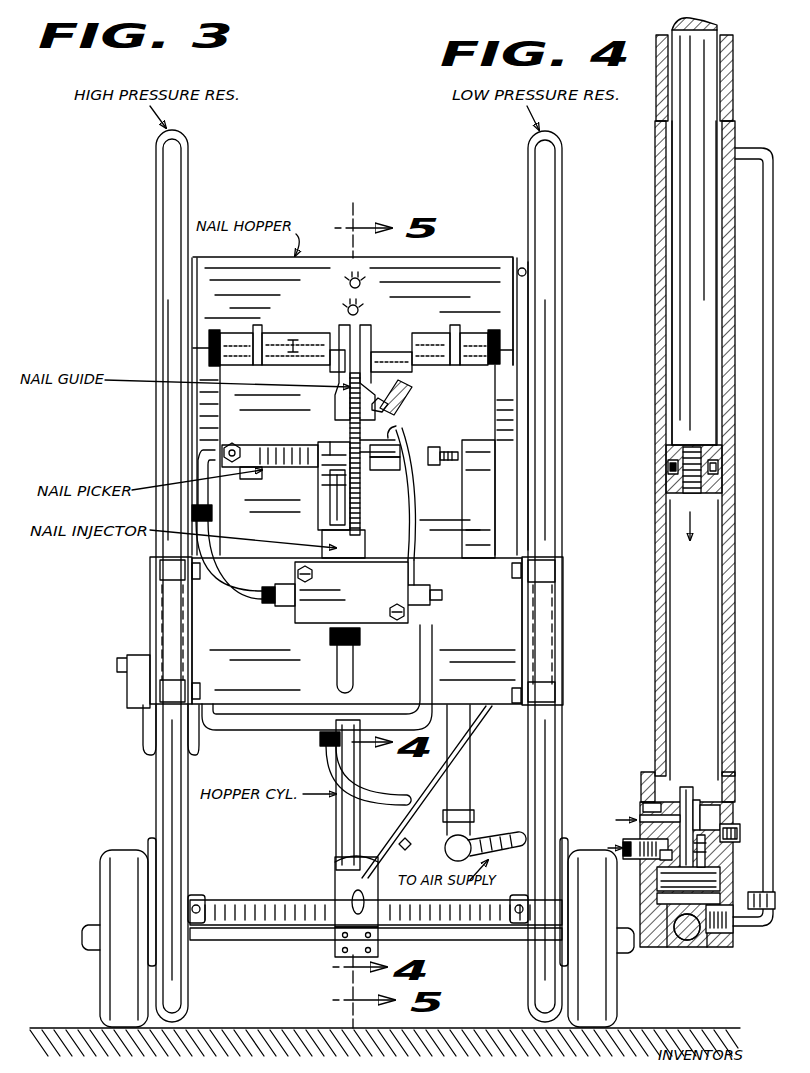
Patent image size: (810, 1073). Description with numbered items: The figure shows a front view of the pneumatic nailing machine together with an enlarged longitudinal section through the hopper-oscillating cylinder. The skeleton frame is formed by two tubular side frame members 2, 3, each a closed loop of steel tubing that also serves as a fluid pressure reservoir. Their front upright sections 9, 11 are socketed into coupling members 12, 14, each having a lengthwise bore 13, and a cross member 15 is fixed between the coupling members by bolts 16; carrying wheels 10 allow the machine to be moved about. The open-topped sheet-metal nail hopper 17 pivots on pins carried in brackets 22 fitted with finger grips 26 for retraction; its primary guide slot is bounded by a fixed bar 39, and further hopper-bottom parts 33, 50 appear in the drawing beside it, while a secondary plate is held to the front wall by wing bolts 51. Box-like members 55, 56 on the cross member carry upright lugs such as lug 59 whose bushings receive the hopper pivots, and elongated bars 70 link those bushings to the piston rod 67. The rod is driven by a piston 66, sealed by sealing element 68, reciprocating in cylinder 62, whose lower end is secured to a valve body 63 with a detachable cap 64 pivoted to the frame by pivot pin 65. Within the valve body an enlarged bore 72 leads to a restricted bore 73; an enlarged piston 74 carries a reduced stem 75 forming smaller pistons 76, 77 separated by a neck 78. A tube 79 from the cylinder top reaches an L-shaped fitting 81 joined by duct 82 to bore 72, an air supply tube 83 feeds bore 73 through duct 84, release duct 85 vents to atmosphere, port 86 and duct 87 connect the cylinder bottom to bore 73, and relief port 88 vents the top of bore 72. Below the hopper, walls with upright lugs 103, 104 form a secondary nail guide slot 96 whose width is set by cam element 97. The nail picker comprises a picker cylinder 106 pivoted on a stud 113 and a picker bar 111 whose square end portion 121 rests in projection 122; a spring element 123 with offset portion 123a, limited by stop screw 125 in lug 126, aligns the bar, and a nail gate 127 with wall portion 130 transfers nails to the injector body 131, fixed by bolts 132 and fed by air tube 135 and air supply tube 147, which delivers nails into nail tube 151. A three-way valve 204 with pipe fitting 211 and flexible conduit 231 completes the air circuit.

In FIG. 3, the tubular side frame member 2 is at (153, 197).
In FIG. 3, the tubular side frame member 3 is at (565, 200).
In FIG. 3, the front upright section 9 is at (160, 432).
In FIG. 3, the carrying wheel 10 is at (118, 883).
In FIG. 3, the front upright section 11 is at (165, 787).
In FIG. 3, the coupling member 12 is at (152, 612).
In FIG. 3, the bore 13 is at (160, 632).
In FIG. 3, the coupling member 14 is at (560, 616).
In FIG. 3, the cross member 15 is at (357, 631).
In FIG. 3, the bolts or screws 16 is at (203, 565).
In FIG. 3, the nail hopper 17 is at (360, 406).
In FIG. 3, the bracket 22 is at (236, 334).
In FIG. 3, the finger grip 26 is at (212, 345).
In FIG. 3, the nail separator block 33 is at (392, 366).
In FIG. 3, the fixed bar 39 is at (335, 366).
In FIG. 3, the hopper bottom plate 50 is at (290, 333).
In FIG. 3, the wing bolt 51 is at (360, 306).
In FIG. 3, the box-like member 55 is at (248, 468).
In FIG. 3, the box-like member 56 is at (356, 460).
In FIG. 3, the upright lug 59 is at (430, 333).
In FIG. 3, the cylinder 62 is at (338, 822).
In FIG. 4, the cylinder 62 is at (652, 546).
In FIG. 4, the valve body 63 is at (648, 774).
In FIG. 4, the detachable cap 64 is at (650, 948).
In FIG. 3, the pivot pin 65 is at (472, 942).
In FIG. 4, the pivot pin 65 is at (698, 950).
In FIG. 4, the piston 66 is at (666, 490).
In FIG. 4, the piston rod 67 is at (688, 360).
In FIG. 4, the sealing element 68 is at (668, 468).
In FIG. 3, the elongated bar 70 is at (257, 325).
In FIG. 4, the enlarged bore 72 is at (685, 940).
In FIG. 4, the restricted bore 73 is at (652, 803).
In FIG. 4, the enlarged piston 74 is at (672, 896).
In FIG. 4, the reduced stem 75 is at (706, 843).
In FIG. 4, the smaller piston 76 is at (706, 852).
In FIG. 4, the smaller piston 77 is at (687, 788).
In FIG. 4, the reduced neck portion 78 is at (697, 812).
In FIG. 3, the tube 79 is at (348, 835).
In FIG. 4, the tube 79 is at (766, 698).
In FIG. 3, the L-shaped fitting 81 is at (348, 898).
In FIG. 4, the L-shaped fitting 81 is at (765, 928).
In FIG. 4, the duct 82 is at (703, 948).
In FIG. 3, the air supply tube 83 is at (408, 840).
In FIG. 4, the air supply tube 83 is at (638, 843).
In FIG. 4, the duct 84 is at (664, 858).
In FIG. 4, the release duct 85 is at (650, 808).
In FIG. 4, the port 86 is at (708, 818).
In FIG. 4, the duct 87 is at (741, 834).
In FIG. 4, the relief port 88 is at (720, 870).
In FIG. 3, the secondary nail guide slot 96 is at (350, 386).
In FIG. 3, the cam element 97 is at (398, 403).
In FIG. 3, the upright lug 103 is at (343, 332).
In FIG. 3, the upright lug 104 is at (372, 333).
In FIG. 3, the picker cylinder 106 is at (280, 445).
In FIG. 3, the picker bar 111 is at (330, 442).
In FIG. 3, the stud 113 is at (234, 446).
In FIG. 3, the end portion of picker bar 121 is at (396, 458).
In FIG. 3, the projection 122 is at (388, 470).
In FIG. 3, the spring element 123 is at (412, 512).
In FIG. 3, the upper offset portion 123a is at (400, 432).
In FIG. 3, the stop screw 125 is at (432, 466).
In FIG. 3, the forwardly projecting lug 126 is at (478, 452).
In FIG. 3, the nail gate 127 is at (346, 510).
In FIG. 3, the wall portion of nail gate 130 is at (320, 470).
In FIG. 3, the injector body 131 is at (351, 592).
In FIG. 3, the bolt 132 is at (314, 575).
In FIG. 3, the air tube 135 is at (242, 598).
In FIG. 3, the air supply tube 147 is at (434, 642).
In FIG. 3, the nail tube 151 is at (342, 680).
In FIG. 3, the 3-way valve 204 is at (470, 712).
In FIG. 3, the pipe fitting 211 is at (471, 778).
In FIG. 3, the flexible conduit 231 is at (392, 795).